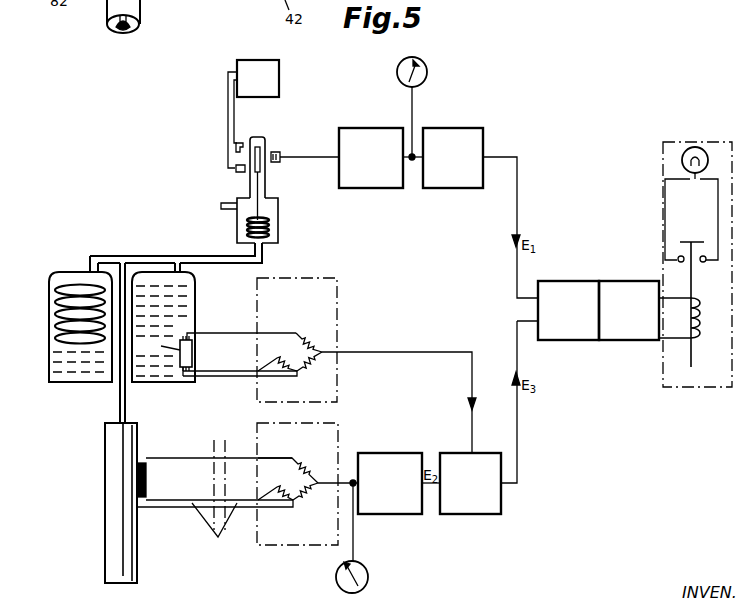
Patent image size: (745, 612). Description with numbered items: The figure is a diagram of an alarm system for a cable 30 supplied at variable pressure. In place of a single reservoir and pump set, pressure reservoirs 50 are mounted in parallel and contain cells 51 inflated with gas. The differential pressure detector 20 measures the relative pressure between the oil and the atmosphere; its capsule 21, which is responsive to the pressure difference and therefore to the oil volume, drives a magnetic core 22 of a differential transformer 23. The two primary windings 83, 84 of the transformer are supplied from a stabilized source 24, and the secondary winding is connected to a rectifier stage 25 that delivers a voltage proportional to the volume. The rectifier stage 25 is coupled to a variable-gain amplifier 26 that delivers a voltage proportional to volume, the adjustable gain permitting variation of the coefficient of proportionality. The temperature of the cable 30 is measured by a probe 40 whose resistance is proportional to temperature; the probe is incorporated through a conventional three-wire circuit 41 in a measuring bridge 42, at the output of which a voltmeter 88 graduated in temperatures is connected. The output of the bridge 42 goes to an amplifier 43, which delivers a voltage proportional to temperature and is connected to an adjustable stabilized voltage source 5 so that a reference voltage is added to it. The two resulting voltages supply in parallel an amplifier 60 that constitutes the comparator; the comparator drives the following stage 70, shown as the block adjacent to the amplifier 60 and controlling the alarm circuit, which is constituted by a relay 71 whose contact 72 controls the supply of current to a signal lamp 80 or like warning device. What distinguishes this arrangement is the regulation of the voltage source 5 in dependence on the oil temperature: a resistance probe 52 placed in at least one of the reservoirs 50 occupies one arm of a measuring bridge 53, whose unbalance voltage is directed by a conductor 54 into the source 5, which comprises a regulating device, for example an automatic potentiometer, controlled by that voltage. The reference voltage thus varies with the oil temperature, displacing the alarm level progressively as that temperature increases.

The adjustable stabilized voltage source 5 is at (472, 504).
The differential pressure detector 20 is at (276, 243).
The capsule 21 is at (272, 232).
The magnetic core 22 is at (260, 165).
The differential transformer 23 is at (280, 152).
The stabilized source 24 is at (279, 74).
The rectifier stage 25 is at (378, 136).
The variable-gain amplifier 26 is at (459, 137).
The cable 30 is at (115, 495).
The probe 40 is at (146, 466).
The 3-wire circuit 41 is at (214, 501).
The measuring bridge 42 is at (300, 547).
The amplifier 43 is at (388, 507).
The pressure reservoirs 50 is at (196, 304).
The cells 51 is at (75, 299).
The resistance probe 52 is at (191, 338).
The measuring bridge 53 is at (323, 311).
The conductor 54 is at (393, 352).
The amplifier 60 is at (581, 291).
The relay driver 70 is at (630, 291).
The relay 71 is at (698, 316).
The contact 72 is at (681, 241).
The lamp 80 is at (683, 156).
The primary winding 83 is at (239, 143).
The primary winding 84 is at (236, 172).
The voltmeter 88 is at (369, 576).